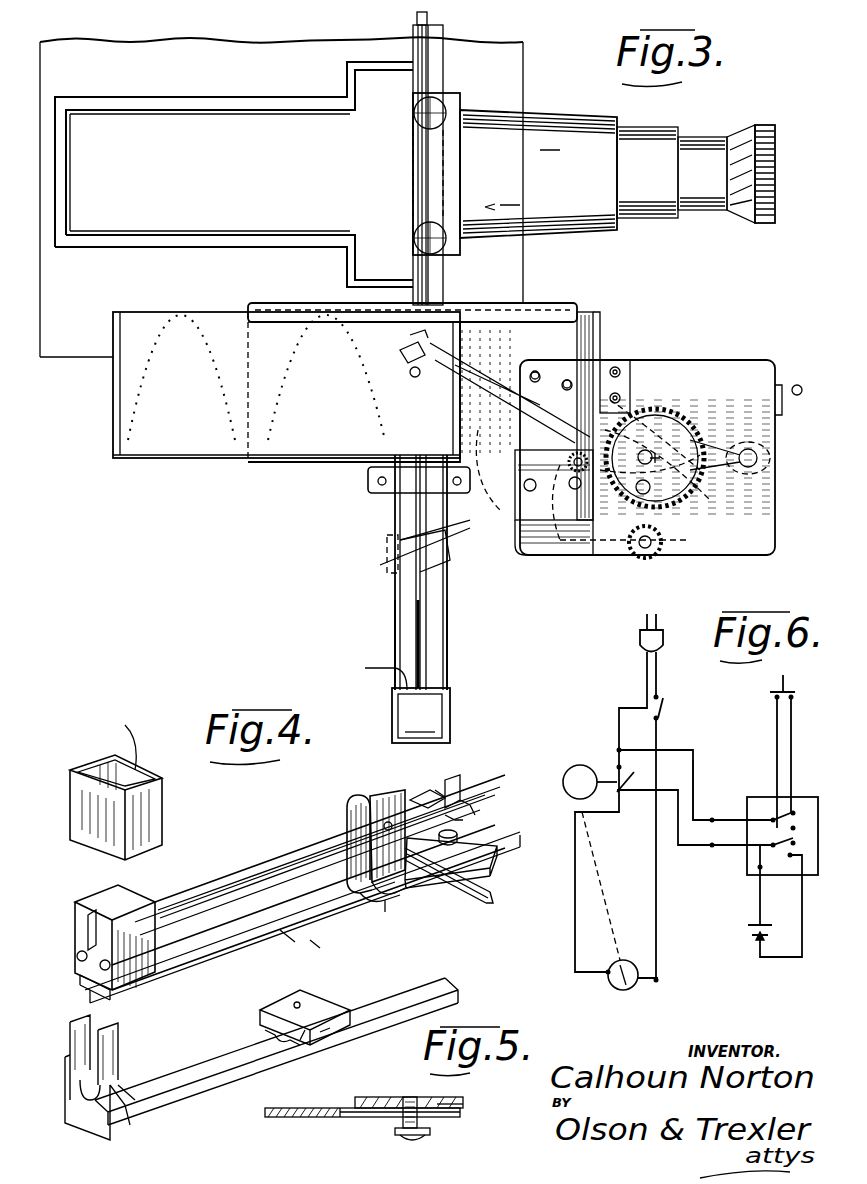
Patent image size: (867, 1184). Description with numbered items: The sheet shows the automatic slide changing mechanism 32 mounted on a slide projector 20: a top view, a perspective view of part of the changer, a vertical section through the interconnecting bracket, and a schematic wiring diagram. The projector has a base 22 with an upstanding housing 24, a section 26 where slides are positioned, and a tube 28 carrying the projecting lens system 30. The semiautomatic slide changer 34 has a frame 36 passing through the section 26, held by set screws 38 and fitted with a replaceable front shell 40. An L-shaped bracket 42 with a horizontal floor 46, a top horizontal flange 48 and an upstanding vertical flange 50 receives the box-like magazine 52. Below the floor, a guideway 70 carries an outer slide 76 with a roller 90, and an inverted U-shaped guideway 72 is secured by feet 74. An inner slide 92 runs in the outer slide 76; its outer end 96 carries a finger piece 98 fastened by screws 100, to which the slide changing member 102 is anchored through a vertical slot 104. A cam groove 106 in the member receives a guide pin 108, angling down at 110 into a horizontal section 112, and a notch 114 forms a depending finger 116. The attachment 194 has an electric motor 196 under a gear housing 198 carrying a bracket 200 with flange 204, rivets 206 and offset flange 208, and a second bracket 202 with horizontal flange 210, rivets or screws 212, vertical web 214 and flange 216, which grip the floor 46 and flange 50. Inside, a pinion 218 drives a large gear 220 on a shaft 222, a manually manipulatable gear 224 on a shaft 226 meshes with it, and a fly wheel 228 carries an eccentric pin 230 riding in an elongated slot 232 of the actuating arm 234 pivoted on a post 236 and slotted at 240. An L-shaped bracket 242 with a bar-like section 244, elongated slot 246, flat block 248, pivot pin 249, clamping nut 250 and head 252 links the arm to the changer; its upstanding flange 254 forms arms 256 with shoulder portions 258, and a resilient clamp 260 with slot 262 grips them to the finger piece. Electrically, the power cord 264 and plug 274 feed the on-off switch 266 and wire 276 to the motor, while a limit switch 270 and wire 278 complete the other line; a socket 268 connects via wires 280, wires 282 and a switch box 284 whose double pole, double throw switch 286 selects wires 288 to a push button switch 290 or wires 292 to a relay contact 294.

In FIG. 3, the slide projector 20 is at (192, 256).
In FIG. 3, the base 22 is at (130, 47).
In FIG. 3, the housing 24 is at (185, 112).
In FIG. 3, the section 26 is at (450, 112).
In FIG. 3, the tube 28 is at (553, 117).
In FIG. 3, the projecting lens system 30 is at (765, 125).
In FIG. 3, the automatic slide changing mechanism 32 is at (380, 511).
In FIG. 3, the semiautomatic slide changer 34 is at (344, 476).
In FIG. 3, the frame 36 is at (417, 30).
In FIG. 3, the set screws 38 is at (432, 232).
In FIG. 3, the front shell 40 is at (440, 37).
In FIG. 3, the L-shaped bracket 42 is at (589, 297).
In FIG. 4, the floor 46 is at (492, 872).
In FIG. 3, the horizontal flange 48 is at (490, 300).
In FIG. 4, the vertical flange 50 is at (483, 900).
In FIG. 3, the magazine 52 is at (175, 445).
In FIG. 4, the guideway 70 is at (382, 908).
In FIG. 4, the U-shaped guideway 72 is at (372, 800).
In FIG. 3, the feet 74 is at (368, 495).
In FIG. 4, the feet 74 is at (340, 870).
In FIG. 4, the outer slide 76 is at (295, 920).
In FIG. 4, the roller 90 is at (459, 836).
In FIG. 3, the inner slide 92 is at (447, 637).
In FIG. 4, the inner slide 92 is at (215, 960).
In FIG. 4, the outer end 96 is at (85, 983).
In FIG. 3, the finger piece 98 is at (430, 705).
In FIG. 4, the finger piece 98 is at (140, 918).
In FIG. 4, the screws 100 is at (80, 957).
In FIG. 3, the slide changing member 102 is at (417, 610).
In FIG. 4, the slide changing member 102 is at (203, 903).
In FIG. 4, the vertical slot 104 is at (90, 930).
In FIG. 4, the cam groove 106 is at (280, 865).
In FIG. 4, the guide pin 108 is at (390, 822).
In FIG. 4, the angled portion 110 is at (430, 788).
In FIG. 4, the horizontal section 112 is at (458, 800).
In FIG. 4, the notch 114 is at (462, 810).
In FIG. 4, the depending finger 116 is at (455, 820).
In FIG. 3, the attachment 194 is at (707, 351).
In FIG. 3, the electric motor 196 is at (395, 520).
In FIG. 6, the electric motor 196 is at (615, 990).
In FIG. 3, the gear housing 198 is at (775, 530).
In FIG. 3, the bracket 200 is at (643, 364).
In FIG. 3, the second bracket 202 is at (572, 530).
In FIG. 3, the flange 204 is at (628, 378).
In FIG. 3, the rivets 206 is at (612, 368).
In FIG. 3, the offset flange 208 is at (565, 378).
In FIG. 3, the horizontal flange 210 is at (548, 478).
In FIG. 3, the rivets or screws 212 is at (567, 390).
In FIG. 3, the vertical web 214 is at (485, 454).
In FIG. 3, the flange 216 is at (523, 416).
In FIG. 3, the pinion 218 is at (592, 498).
In FIG. 3, the large gear 220 is at (700, 430).
In FIG. 3, the shaft 222 is at (655, 416).
In FIG. 3, the manually manipulatable gear 224 is at (648, 560).
In FIG. 3, the shaft 226 is at (665, 540).
In FIG. 3, the fly wheel 228 is at (690, 420).
In FIG. 6, the fly wheel 228 is at (572, 768).
In FIG. 3, the eccentric pin 230 is at (705, 450).
In FIG. 3, the elongated slot 232 is at (705, 465).
In FIG. 3, the actuating arm 234 is at (402, 420).
In FIG. 6, the actuating arm 234 is at (606, 768).
In FIG. 3, the post 236 is at (765, 455).
In FIG. 3, the slot 240 is at (387, 552).
In FIG. 4, the L-shaped bracket 242 is at (209, 1098).
In FIG. 5, the L-shaped bracket 242 is at (303, 1126).
In FIG. 4, the bar-like section 244 is at (185, 1065).
In FIG. 5, the bar-like section 244 is at (305, 1108).
In FIG. 4, the elongated slot 246 is at (300, 1040).
In FIG. 5, the elongated slot 246 is at (378, 1117).
In FIG. 4, the flat block 248 is at (360, 1000).
In FIG. 5, the flat block 248 is at (463, 1100).
In FIG. 4, the pivot pin 249 is at (297, 1003).
In FIG. 5, the pivot pin 249 is at (450, 1118).
In FIG. 5, the clamping nut 250 is at (405, 1100).
In FIG. 5, the head 252 is at (412, 1140).
In FIG. 4, the upstanding flange 254 is at (70, 1113).
In FIG. 4, the arms 256 is at (110, 1030).
In FIG. 4, the shoulder portions 258 is at (125, 1105).
In FIG. 3, the clamp 260 is at (440, 720).
In FIG. 4, the clamp 260 is at (154, 752).
In FIG. 3, the slot 262 is at (365, 671).
In FIG. 4, the slot 262 is at (112, 749).
In FIG. 6, the power cord 264 is at (645, 672).
In FIG. 3, the on-off switch 266 is at (797, 385).
In FIG. 6, the on-off switch 266 is at (665, 705).
In FIG. 6, the socket 268 is at (745, 865).
In FIG. 3, the limit switch 270 is at (535, 370).
In FIG. 6, the limit switch 270 is at (668, 760).
In FIG. 6, the plug 274 is at (662, 636).
In FIG. 6, the wire 276 is at (658, 836).
In FIG. 6, the wire 278 is at (575, 880).
In FIG. 6, the wires 280 is at (700, 757).
In FIG. 6, the wires 282 is at (728, 810).
In FIG. 6, the switch box 284 is at (760, 900).
In FIG. 6, the double pole, double throw switch 286 is at (770, 810).
In FIG. 6, the wires 288 is at (781, 718).
In FIG. 6, the push button switch 290 is at (780, 690).
In FIG. 6, the wires 292 is at (802, 905).
In FIG. 6, the relay contact 294 is at (758, 936).